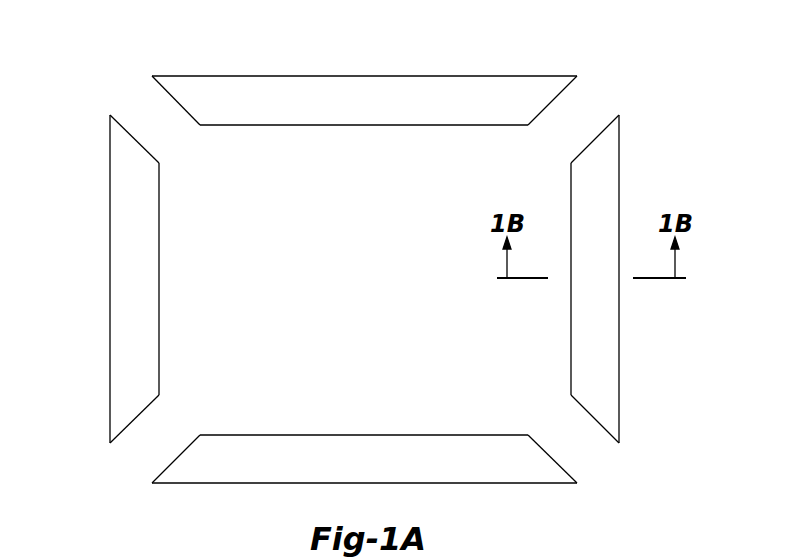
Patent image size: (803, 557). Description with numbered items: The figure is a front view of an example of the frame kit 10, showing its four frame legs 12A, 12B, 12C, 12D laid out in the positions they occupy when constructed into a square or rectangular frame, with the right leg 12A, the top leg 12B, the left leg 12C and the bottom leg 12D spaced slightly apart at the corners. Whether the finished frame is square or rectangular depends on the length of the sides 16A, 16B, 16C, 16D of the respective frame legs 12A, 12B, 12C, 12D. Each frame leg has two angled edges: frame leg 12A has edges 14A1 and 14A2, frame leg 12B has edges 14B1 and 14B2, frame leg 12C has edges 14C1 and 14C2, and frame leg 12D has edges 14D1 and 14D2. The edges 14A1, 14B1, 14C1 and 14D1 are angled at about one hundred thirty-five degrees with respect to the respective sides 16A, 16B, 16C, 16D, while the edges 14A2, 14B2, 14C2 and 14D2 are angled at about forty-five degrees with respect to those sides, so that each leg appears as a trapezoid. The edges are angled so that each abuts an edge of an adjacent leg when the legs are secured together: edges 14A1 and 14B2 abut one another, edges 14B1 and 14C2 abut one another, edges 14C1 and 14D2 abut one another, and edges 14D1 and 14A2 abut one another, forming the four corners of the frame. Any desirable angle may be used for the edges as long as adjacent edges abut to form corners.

The frame kit 10 is at (650, 38).
The frame leg 12A is at (610, 323).
The frame leg 12B is at (263, 86).
The frame leg 12C is at (118, 323).
The frame leg 12D is at (483, 472).
The edge 14A1 is at (603, 128).
The edge 14A2 is at (603, 432).
The edge 14B1 is at (168, 97).
The edge 14B2 is at (562, 97).
The edge 14C1 is at (128, 432).
The edge 14C2 is at (128, 128).
The edge 14D1 is at (565, 458).
The edge 14D2 is at (170, 458).
The side 16A is at (570, 345).
The side 16B is at (362, 126).
The side 16C is at (160, 345).
The side 16D is at (363, 435).